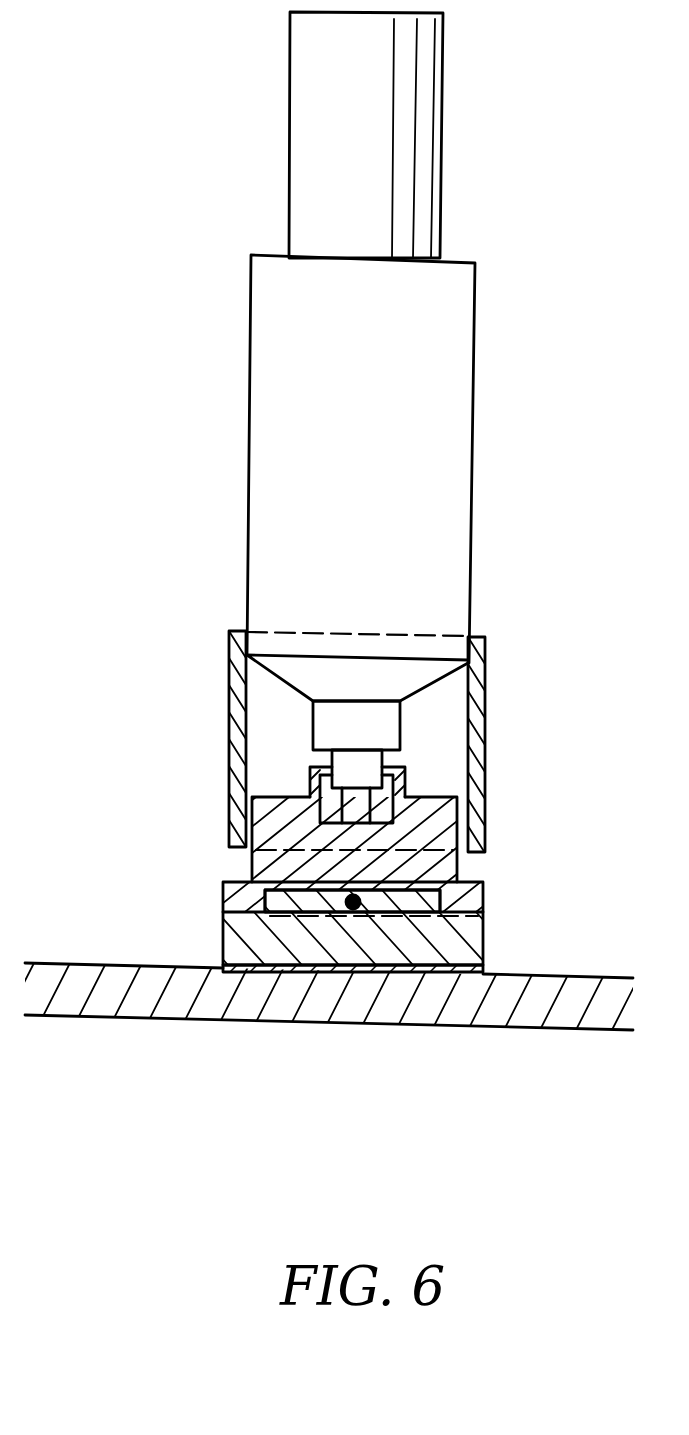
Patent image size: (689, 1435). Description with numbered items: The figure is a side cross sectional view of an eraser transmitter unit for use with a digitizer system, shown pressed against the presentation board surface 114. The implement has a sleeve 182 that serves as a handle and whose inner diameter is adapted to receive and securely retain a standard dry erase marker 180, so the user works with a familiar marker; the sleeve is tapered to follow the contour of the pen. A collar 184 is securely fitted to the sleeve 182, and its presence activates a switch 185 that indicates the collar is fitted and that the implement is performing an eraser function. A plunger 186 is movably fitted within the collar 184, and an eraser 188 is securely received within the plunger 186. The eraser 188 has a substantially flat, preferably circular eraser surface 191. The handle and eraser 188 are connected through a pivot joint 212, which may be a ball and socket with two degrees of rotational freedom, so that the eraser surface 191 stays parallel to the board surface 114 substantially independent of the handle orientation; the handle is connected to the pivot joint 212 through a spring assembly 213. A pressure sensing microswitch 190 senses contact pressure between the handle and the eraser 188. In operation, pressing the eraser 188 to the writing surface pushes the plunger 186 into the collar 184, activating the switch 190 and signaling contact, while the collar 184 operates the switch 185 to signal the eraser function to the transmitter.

The base plate / support surface 114 is at (173, 1005).
The dry erase marker 180 is at (313, 173).
The sleeve 182 is at (277, 485).
The collar 184 is at (235, 738).
The switch 185 is at (247, 655).
The plunger 186 is at (287, 862).
The eraser 188 is at (247, 952).
The pressure sensing microswitch 190 is at (368, 760).
The eraser surface 191 is at (437, 973).
The pivot joint 212 is at (390, 890).
The spring assembly 213 is at (353, 905).